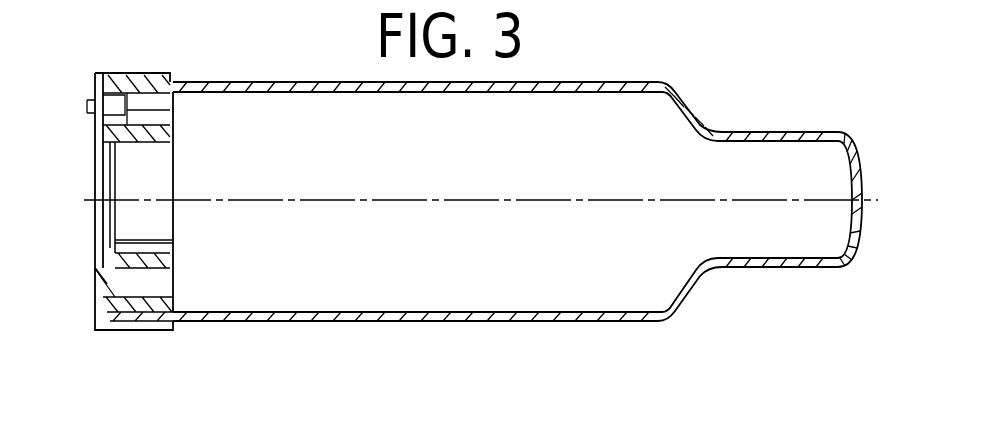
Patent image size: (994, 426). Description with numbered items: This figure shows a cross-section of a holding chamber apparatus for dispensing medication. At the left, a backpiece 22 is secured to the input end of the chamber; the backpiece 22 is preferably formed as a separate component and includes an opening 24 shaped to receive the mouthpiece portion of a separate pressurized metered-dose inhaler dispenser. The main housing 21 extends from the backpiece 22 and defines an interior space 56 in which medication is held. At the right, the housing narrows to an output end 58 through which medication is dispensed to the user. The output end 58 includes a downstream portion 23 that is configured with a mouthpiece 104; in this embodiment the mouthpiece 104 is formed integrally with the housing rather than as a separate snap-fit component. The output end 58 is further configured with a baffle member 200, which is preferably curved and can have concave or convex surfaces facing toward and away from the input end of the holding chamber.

The main housing 21 is at (405, 330).
The backpiece 22 is at (101, 291).
The downstream portion 23 is at (733, 115).
The opening 24 is at (109, 232).
The interior space 56 is at (531, 250).
The output end 58 is at (683, 291).
The mouthpiece 104 is at (802, 268).
The baffle member 200 is at (860, 163).